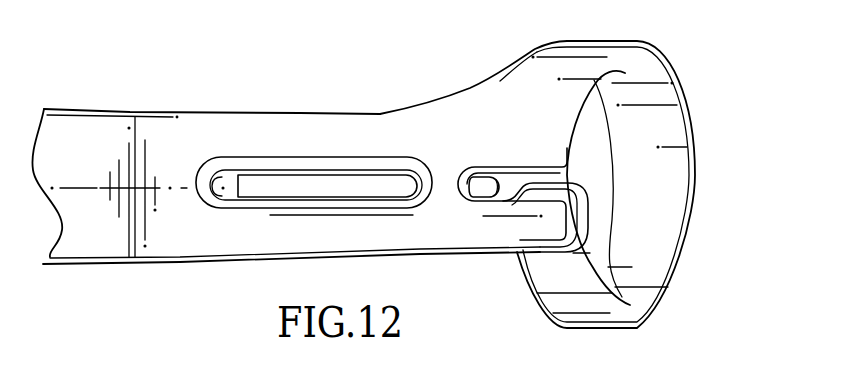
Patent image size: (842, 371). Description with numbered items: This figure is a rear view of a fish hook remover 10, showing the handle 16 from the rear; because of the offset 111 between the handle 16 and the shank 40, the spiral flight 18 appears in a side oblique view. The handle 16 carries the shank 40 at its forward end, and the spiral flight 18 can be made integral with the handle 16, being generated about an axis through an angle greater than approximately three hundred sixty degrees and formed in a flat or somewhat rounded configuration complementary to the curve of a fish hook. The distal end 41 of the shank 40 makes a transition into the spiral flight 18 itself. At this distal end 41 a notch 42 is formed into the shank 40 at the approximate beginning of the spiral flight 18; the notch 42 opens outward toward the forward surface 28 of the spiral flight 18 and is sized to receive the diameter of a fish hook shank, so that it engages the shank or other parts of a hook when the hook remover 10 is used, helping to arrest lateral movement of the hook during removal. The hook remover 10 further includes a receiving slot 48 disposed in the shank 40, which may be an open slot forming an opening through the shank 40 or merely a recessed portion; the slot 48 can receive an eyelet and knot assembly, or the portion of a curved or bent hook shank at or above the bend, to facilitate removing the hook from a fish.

The hook remover 10 is at (133, 46).
The handle 16 is at (82, 275).
The spiral flight 18 is at (680, 62).
The forward surface 28 is at (672, 205).
The shank 40 is at (308, 105).
The distal end 41 is at (468, 89).
The notch 42 is at (482, 190).
The receiving slot 48 is at (324, 172).
The offset 111 is at (133, 264).